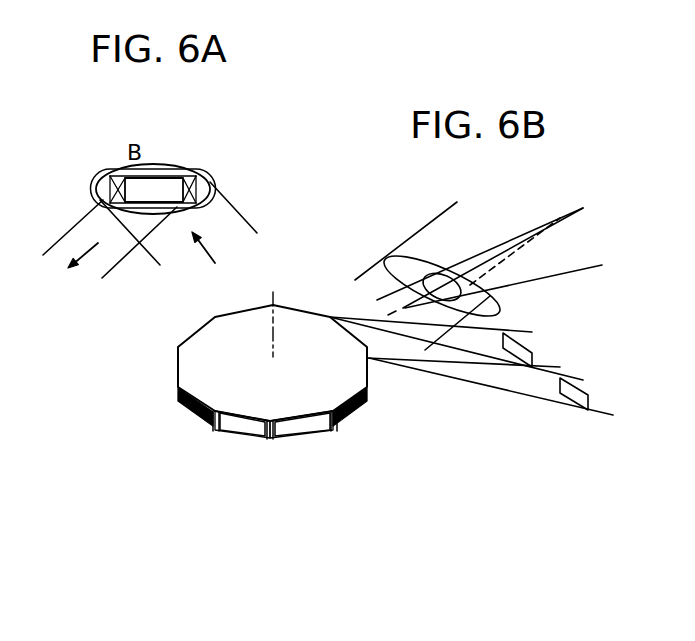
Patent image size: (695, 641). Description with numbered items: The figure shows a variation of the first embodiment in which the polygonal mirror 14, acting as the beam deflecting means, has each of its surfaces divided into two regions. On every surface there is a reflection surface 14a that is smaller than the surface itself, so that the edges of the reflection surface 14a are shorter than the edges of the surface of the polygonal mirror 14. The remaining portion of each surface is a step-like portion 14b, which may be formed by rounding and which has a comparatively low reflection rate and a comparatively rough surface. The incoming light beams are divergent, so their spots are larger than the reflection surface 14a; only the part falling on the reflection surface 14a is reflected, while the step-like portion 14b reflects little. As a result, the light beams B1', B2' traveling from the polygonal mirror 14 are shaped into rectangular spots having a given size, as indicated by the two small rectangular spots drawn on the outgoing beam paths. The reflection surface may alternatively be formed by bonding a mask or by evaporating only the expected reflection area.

In FIG. 6A, the polygonal mirror 14 is at (105, 177).
In FIG. 6B, the polygonal mirror 14 is at (198, 362).
In FIG. 6A, the reflection surface 14a is at (163, 183).
In FIG. 6B, the reflection surface 14a is at (297, 428).
In FIG. 6A, the step-like portion 14b is at (207, 178).
In FIG. 6B, the step-like portion 14b is at (332, 426).
In FIG. 6B, the light beam traveling from the polygonal mirror B1' is at (594, 391).
In FIG. 6B, the light beam traveling from the polygonal mirror B2' is at (537, 344).